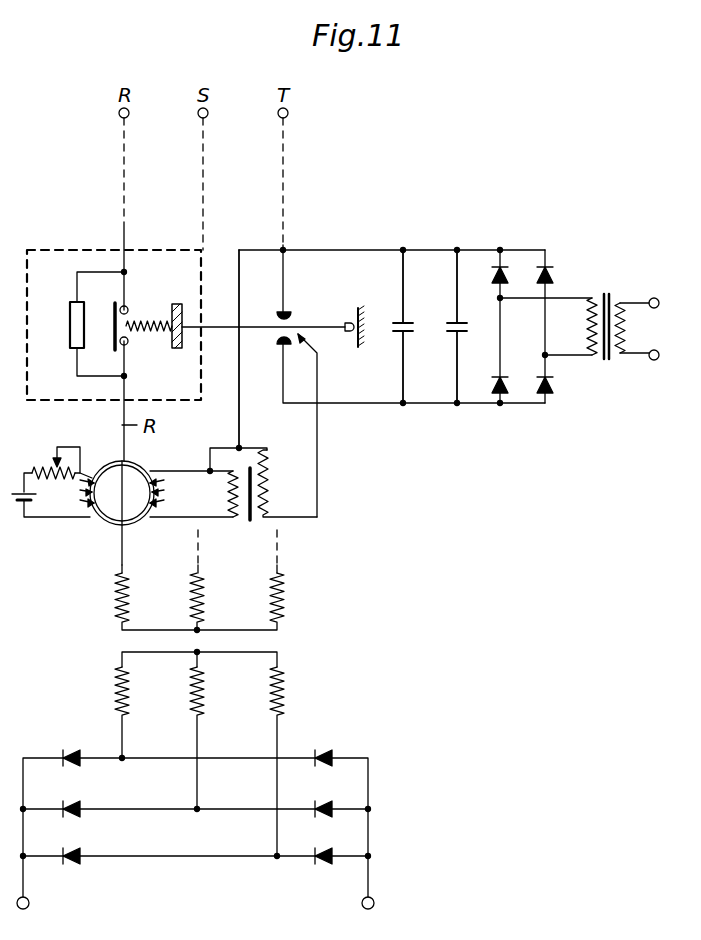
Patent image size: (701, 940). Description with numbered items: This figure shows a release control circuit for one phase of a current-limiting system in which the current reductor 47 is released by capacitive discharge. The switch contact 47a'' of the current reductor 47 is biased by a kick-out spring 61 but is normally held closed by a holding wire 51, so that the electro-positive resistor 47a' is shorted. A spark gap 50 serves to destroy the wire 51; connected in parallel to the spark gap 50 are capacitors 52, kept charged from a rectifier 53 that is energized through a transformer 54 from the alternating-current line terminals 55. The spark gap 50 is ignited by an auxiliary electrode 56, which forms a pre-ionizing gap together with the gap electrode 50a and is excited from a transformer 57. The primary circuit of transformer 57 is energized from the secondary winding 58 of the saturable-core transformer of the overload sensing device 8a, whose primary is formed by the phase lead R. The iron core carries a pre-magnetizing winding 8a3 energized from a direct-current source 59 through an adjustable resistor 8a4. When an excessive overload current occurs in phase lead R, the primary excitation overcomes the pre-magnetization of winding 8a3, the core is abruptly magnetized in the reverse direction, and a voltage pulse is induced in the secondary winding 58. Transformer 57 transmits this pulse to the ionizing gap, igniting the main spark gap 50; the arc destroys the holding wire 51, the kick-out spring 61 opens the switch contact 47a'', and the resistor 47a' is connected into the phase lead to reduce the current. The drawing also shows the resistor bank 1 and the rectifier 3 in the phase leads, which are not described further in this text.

The current reductor 47 is at (71, 256).
The electro-positive resistor 47a' is at (76, 324).
The switch contact 47a'' is at (144, 338).
The kick-out spring 61 is at (142, 321).
The holding wire 51 is at (217, 327).
The gap electrode 50a is at (293, 318).
The spark gap 50 is at (276, 346).
The auxiliary electrode 56 is at (300, 346).
The capacitors 52 is at (430, 327).
The rectifier 53 is at (533, 339).
The transformer 54 is at (562, 317).
The alternating-current line terminals 55 is at (649, 329).
The overload sensing device 8a is at (100, 545).
The pre-magnetizing winding 8a3 is at (86, 464).
The adjustable resistor 8a4 is at (42, 462).
The direct-current source 59 is at (52, 495).
The secondary winding 58 is at (194, 493).
The transformer 57 is at (263, 395).
The resistor bank 1 is at (308, 651).
The rectifier 3 is at (392, 773).